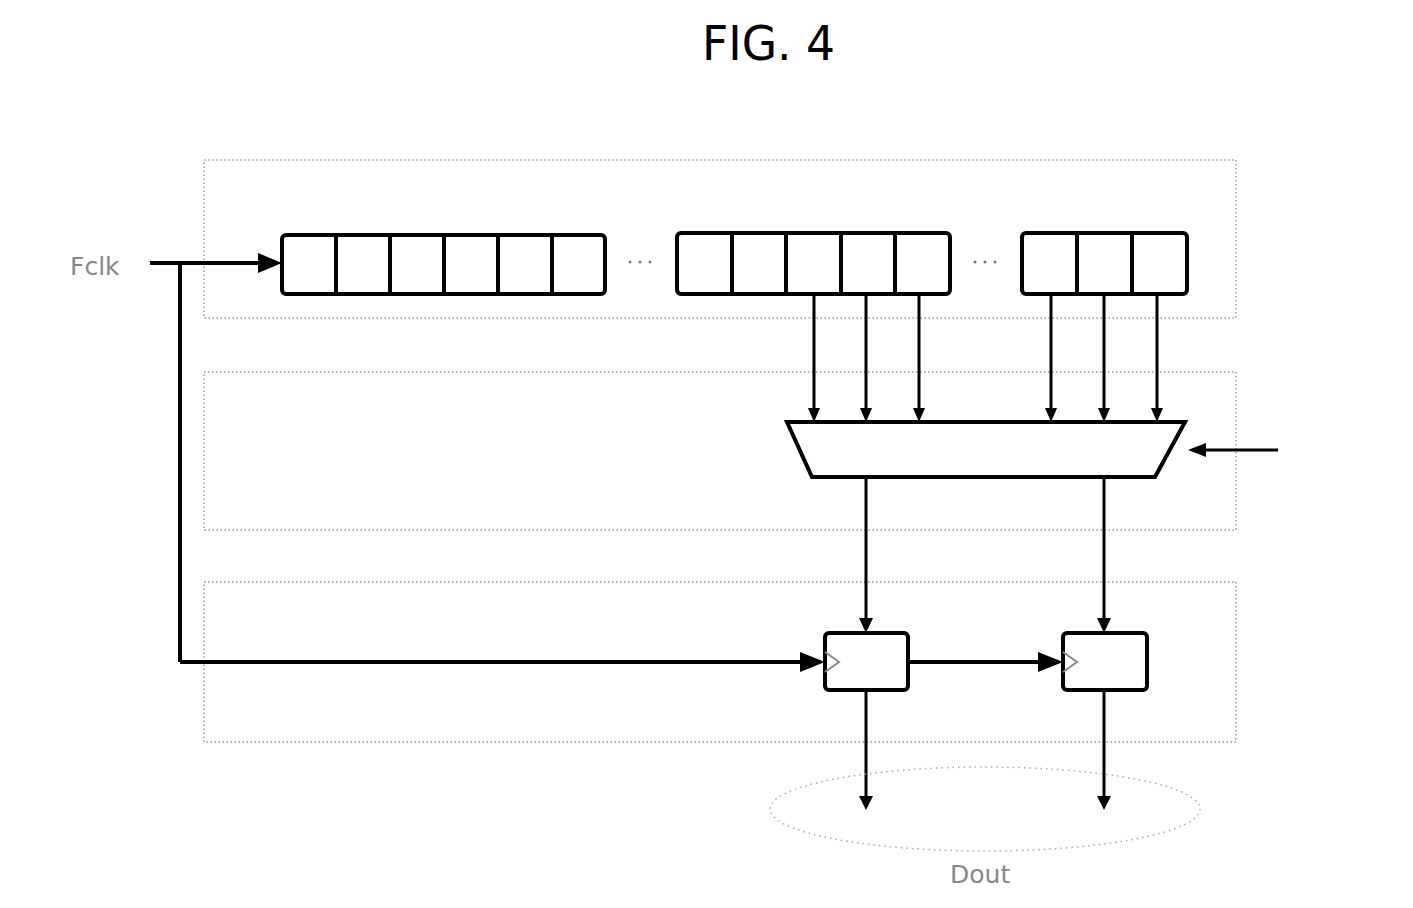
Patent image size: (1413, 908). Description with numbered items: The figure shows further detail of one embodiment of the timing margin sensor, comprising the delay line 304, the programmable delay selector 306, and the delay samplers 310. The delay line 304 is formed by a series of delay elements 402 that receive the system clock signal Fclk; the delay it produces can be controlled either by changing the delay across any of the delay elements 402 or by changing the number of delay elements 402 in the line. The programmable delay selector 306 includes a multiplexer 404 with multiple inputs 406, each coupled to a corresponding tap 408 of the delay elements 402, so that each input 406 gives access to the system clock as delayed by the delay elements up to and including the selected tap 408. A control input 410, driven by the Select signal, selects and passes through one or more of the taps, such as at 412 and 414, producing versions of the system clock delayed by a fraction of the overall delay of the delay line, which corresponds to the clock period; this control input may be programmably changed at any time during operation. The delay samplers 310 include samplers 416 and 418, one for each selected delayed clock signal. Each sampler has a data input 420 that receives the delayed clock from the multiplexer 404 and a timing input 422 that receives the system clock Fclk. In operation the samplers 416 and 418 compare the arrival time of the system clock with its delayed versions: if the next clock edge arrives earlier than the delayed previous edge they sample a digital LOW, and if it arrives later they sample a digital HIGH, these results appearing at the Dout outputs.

The delay line 304 is at (720, 239).
The programmable delay selector 306 is at (720, 451).
The delay samplers 310 is at (720, 662).
The delay elements 402 is at (518, 233).
The multiplexer 404 is at (805, 458).
The inputs 406 is at (810, 410).
The taps 408 is at (814, 297).
The control input 410 is at (1175, 448).
The selected tap output 412 is at (866, 570).
The selected tap output 414 is at (1104, 570).
The sampler 416 is at (908, 640).
The sampler 418 is at (1147, 648).
The data input 420 is at (864, 628).
The timing input 422 is at (825, 670).